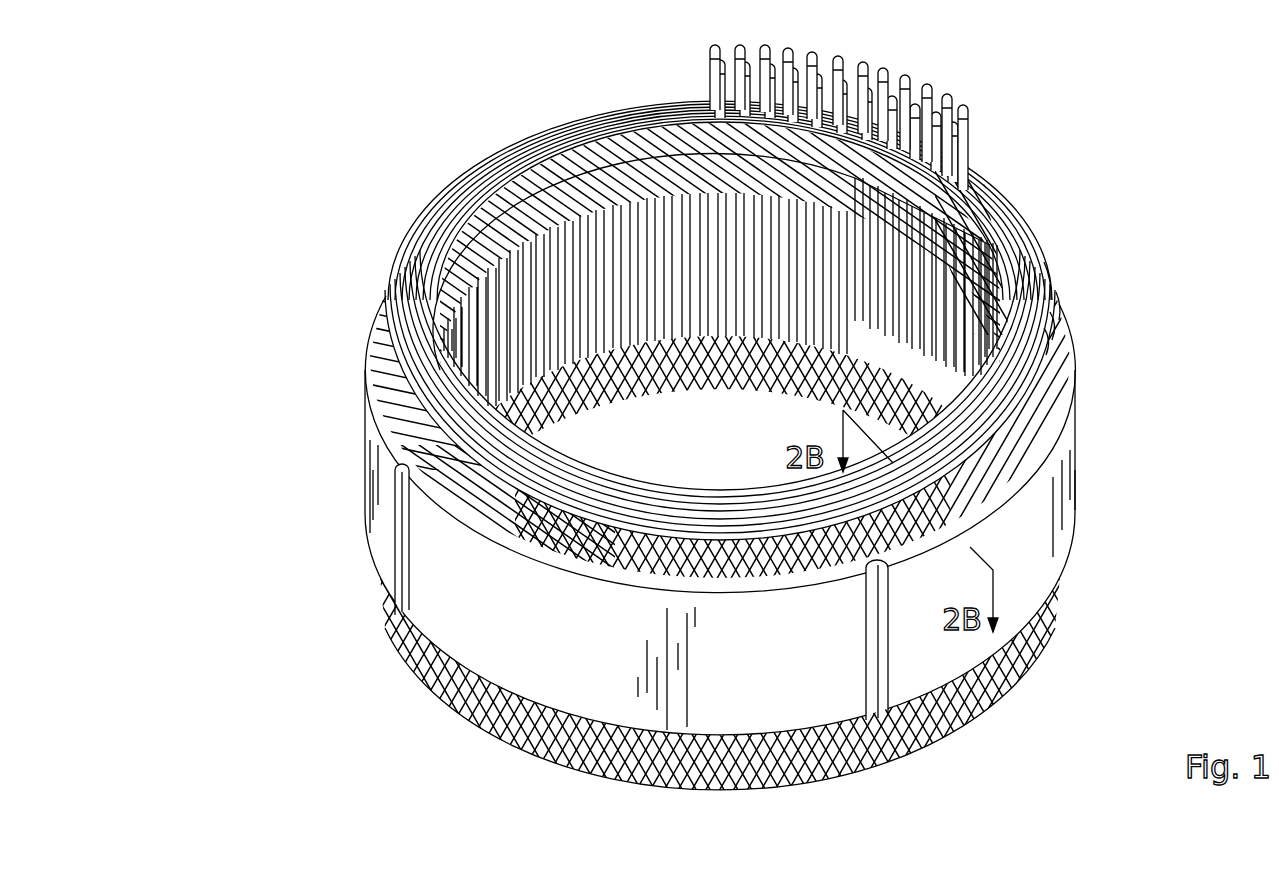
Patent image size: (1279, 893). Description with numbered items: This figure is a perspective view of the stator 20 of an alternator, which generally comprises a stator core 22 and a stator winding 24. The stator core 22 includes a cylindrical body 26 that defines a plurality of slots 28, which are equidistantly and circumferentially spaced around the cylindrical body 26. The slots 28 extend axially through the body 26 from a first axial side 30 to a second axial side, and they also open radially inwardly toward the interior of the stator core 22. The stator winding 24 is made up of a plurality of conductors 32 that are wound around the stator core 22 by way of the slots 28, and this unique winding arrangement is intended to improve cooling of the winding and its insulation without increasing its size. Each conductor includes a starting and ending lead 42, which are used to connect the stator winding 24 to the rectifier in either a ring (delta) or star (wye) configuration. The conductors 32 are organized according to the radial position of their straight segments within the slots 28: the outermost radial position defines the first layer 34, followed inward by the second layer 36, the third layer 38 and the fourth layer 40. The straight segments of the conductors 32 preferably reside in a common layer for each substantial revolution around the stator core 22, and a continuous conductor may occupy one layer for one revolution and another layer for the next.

The stator 20 is at (313, 133).
The stator core 22 is at (336, 446).
The stator winding 24 is at (392, 258).
The cylindrical body 26 is at (362, 476).
The slots 28 is at (763, 310).
The first axial side 30 is at (373, 357).
The conductors 32 is at (515, 160).
The first layer 34 is at (1058, 335).
The second layer 36 is at (1057, 320).
The third layer 38 is at (1063, 300).
The fourth layer 40 is at (1048, 282).
The starting and ending lead 42 is at (712, 46).